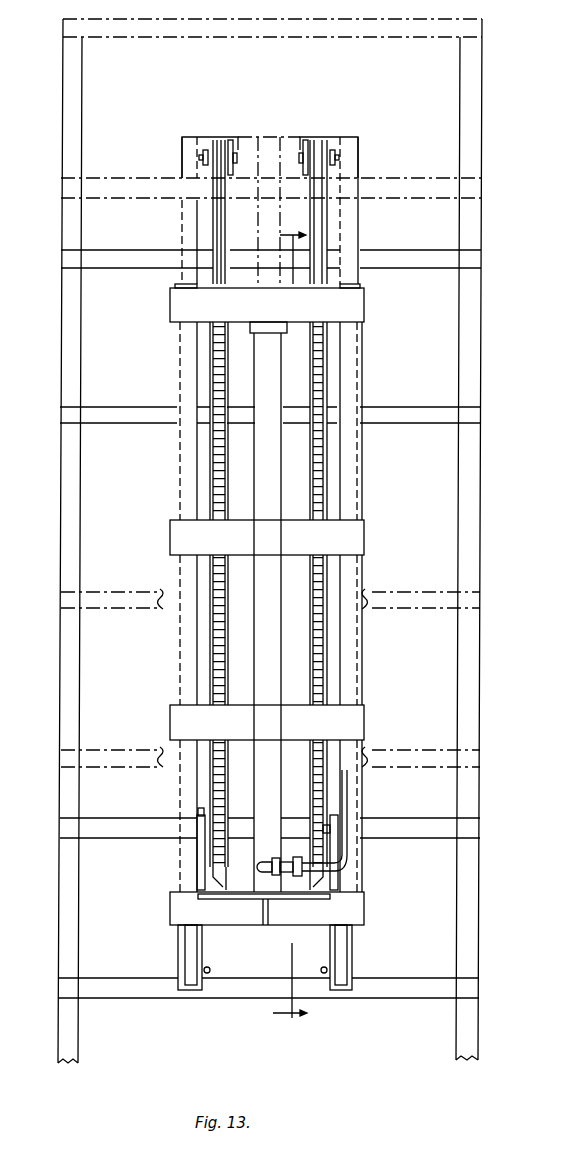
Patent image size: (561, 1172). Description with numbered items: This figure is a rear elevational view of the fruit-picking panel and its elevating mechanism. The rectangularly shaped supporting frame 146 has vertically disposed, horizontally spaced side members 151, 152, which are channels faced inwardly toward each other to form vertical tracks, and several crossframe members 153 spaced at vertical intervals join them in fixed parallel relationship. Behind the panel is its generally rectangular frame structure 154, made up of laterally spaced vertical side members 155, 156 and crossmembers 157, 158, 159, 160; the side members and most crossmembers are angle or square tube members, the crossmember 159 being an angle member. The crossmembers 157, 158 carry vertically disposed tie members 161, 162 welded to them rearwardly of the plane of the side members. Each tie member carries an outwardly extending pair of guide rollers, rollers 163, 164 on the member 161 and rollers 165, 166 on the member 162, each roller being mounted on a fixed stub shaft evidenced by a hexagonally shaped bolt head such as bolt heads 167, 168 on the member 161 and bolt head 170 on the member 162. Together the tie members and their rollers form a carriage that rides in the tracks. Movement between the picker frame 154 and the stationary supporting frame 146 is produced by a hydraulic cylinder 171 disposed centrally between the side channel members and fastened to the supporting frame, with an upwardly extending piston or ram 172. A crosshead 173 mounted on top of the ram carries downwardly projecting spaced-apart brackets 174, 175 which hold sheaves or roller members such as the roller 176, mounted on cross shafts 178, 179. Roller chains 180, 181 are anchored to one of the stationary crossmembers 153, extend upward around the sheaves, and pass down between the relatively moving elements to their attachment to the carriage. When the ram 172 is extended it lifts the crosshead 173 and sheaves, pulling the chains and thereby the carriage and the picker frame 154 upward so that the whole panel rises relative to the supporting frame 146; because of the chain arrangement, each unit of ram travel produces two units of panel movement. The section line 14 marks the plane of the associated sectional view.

The section line 14- 14 is at (288, 627).
The supporting frame 146 is at (361, 498).
The side member 151 is at (188, 481).
The side member 152 is at (360, 390).
The crossframe members 153 is at (390, 904).
The frame structure 154 is at (481, 687).
The side member 155 is at (65, 955).
The side member 156 is at (470, 912).
The crossmember 157 is at (118, 990).
The crossmember 158 is at (90, 832).
The crossmember 159 is at (118, 417).
The crossmember 160 is at (118, 253).
The tie member 161 is at (210, 995).
The tie member 162 is at (330, 1010).
The guide roller 163 is at (193, 970).
The guide roller 164 is at (195, 843).
The guide roller 165 is at (335, 968).
The guide roller 166 is at (333, 845).
The bolt head 167 is at (210, 969).
The bolt head 168 is at (200, 812).
The bolt head 170 is at (327, 825).
The hydraulic cylinder 171 is at (260, 620).
The piston or ram 172 is at (263, 147).
The crosshead 173 is at (299, 133).
The bracket 174 is at (208, 148).
The bracket 175 is at (338, 140).
The sheave or roller member 176 is at (228, 133).
The cross shaft 178 is at (203, 157).
The cross shaft 179 is at (338, 160).
The roller chain 180 is at (212, 362).
The roller chain 181 is at (332, 366).